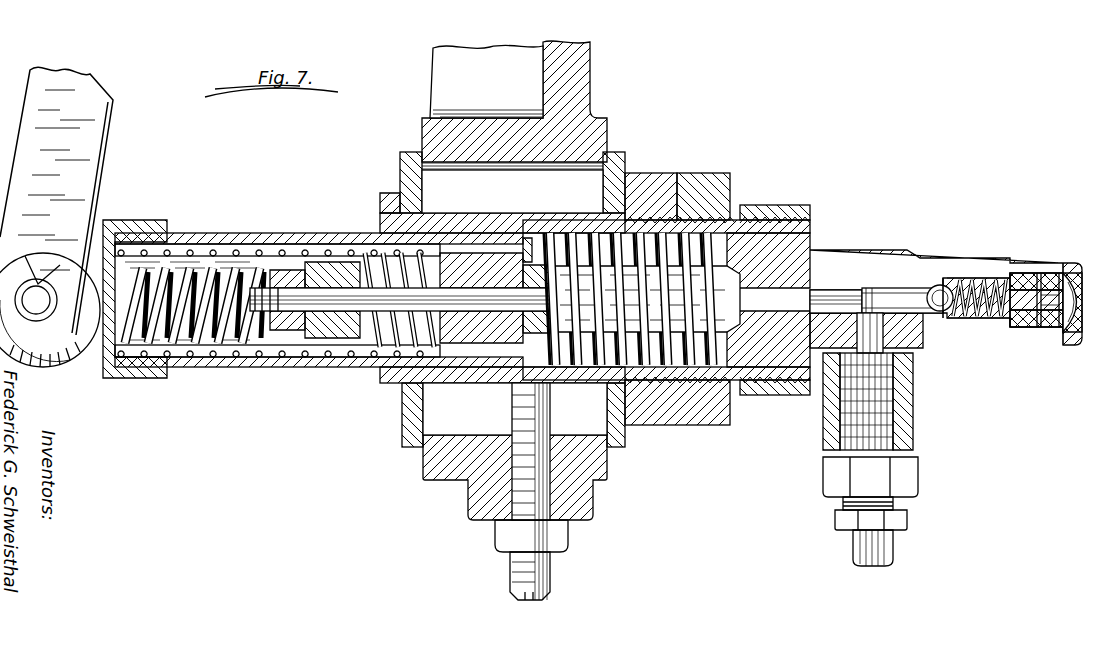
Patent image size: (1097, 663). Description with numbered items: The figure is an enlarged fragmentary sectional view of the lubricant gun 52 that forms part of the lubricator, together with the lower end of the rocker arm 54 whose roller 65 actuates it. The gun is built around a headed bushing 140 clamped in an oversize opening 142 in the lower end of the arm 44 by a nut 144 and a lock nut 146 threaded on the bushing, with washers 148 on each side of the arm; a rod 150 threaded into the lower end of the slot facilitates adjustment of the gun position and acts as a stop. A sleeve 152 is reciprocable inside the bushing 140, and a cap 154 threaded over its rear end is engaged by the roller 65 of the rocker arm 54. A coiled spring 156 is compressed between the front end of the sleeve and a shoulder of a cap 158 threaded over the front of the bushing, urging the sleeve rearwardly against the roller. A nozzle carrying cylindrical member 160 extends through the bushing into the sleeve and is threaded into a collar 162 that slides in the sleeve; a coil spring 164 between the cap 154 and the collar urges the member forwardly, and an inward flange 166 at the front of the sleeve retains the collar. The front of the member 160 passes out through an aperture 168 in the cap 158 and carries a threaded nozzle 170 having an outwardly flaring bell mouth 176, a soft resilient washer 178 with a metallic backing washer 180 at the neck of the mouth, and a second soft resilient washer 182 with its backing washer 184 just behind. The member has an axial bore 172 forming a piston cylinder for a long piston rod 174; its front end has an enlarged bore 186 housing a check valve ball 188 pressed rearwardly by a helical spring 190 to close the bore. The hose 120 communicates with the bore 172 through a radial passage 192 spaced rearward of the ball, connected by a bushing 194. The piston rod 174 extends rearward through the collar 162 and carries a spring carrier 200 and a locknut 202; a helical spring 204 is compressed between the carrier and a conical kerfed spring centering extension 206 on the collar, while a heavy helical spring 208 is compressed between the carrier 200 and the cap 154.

The arm 44 is at (573, 75).
The lubricant gun 52 is at (318, 222).
The rocker arm 54 is at (92, 172).
The roller 65 is at (62, 362).
The hose 120 is at (883, 547).
The headed bushing 140 is at (400, 205).
The oversize opening 142 is at (447, 467).
The nut 144 is at (640, 180).
The lock nut 146 is at (700, 183).
The washers 148 is at (420, 153).
The rod 150 is at (552, 583).
The sleeve 152 is at (305, 360).
The cap 154 is at (143, 380).
The coiled spring 156 is at (695, 427).
The cap 158 is at (790, 210).
The nozzle carrying cylindrical member 160 is at (868, 248).
The collar 162 is at (487, 385).
The coil spring 164 is at (256, 360).
The shoulder or flange 166 is at (523, 230).
The aperture 168 is at (818, 248).
The nozzle 170 is at (997, 255).
The axial bore 172 is at (890, 293).
The piston 174 is at (822, 298).
The bell mouth 176 is at (1087, 277).
The soft resilient washer 178 is at (1050, 330).
The metallic backing washer 180 is at (1040, 330).
The soft resilient washer 182 is at (1017, 340).
The metallic backing washer 184 is at (1007, 343).
The enlarged axial bore 186 is at (977, 280).
The check valve ball 188 is at (950, 280).
The helical spring 190 is at (1013, 273).
The radial passage 192 is at (875, 340).
The bushing 194 is at (913, 413).
The spring carrier 200 is at (343, 233).
The locknut 202 is at (284, 232).
The helical spring 204 is at (368, 353).
The conical kerfed spring centering extension 206 is at (433, 322).
The heavy helical spring 208 is at (208, 357).